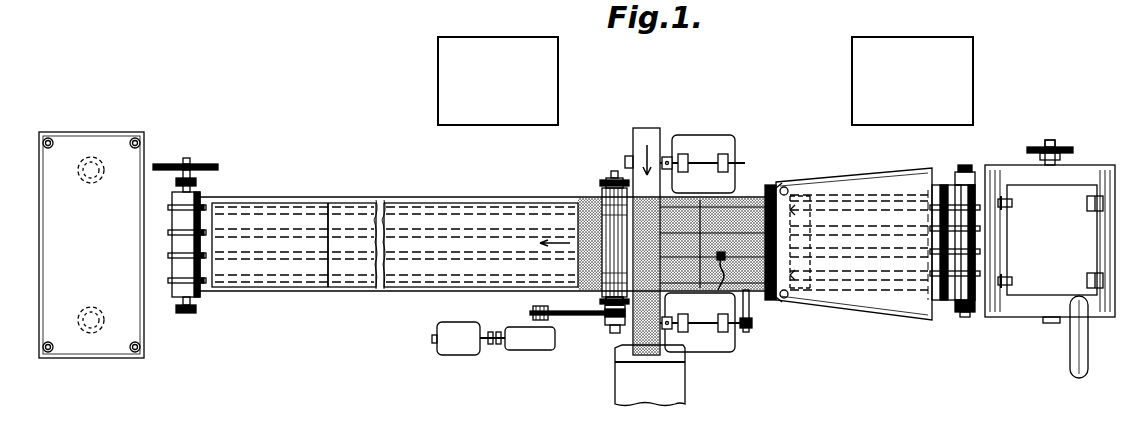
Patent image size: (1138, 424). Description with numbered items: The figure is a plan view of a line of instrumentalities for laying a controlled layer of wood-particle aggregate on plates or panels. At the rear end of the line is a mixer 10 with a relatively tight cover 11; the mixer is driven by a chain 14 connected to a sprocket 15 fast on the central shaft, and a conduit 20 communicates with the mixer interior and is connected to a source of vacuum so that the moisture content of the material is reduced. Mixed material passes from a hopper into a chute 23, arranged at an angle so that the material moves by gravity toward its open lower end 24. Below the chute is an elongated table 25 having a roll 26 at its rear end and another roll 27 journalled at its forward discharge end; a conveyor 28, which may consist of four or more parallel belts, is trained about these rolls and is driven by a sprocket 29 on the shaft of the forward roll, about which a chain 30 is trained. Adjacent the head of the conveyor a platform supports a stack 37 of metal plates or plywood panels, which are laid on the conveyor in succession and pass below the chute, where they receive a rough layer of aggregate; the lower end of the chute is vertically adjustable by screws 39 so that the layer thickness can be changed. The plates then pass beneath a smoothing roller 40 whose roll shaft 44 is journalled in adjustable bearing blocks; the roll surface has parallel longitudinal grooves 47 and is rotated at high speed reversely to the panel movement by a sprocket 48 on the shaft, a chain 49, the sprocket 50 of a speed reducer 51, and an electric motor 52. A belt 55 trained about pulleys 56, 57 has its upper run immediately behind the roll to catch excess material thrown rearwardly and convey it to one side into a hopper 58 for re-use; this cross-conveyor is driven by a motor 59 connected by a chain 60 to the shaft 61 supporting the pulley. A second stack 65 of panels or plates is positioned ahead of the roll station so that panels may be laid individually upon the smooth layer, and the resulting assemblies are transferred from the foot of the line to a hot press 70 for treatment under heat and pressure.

The mixer 10 is at (1013, 163).
The cover 11 is at (1035, 283).
The chain 14 is at (1043, 148).
The sprocket 15 is at (1068, 149).
The conduit 20 is at (1070, 342).
The chute 23 is at (904, 177).
The open lower end 24 is at (808, 192).
The table 25 is at (560, 197).
The roll 26 is at (975, 305).
The roll 27 is at (199, 296).
The conveyor 28 is at (170, 233).
The sprocket 29 is at (200, 165).
The chain 30 is at (215, 172).
The stack 37 is at (844, 83).
The screws 39 is at (785, 188).
The smoothing roller 40 is at (601, 190).
The roll shaft 44 is at (614, 172).
The grooves 47 is at (606, 292).
The sprocket 48 is at (606, 322).
The chain 49 is at (575, 318).
The sprocket 50 is at (533, 312).
The speed reducer 51 is at (520, 343).
The electric motor 52 is at (455, 345).
The belt 55 is at (676, 136).
The pulley 56 is at (633, 130).
The pulley 57 is at (625, 347).
The hopper 58 is at (668, 380).
The motor 59 is at (722, 282).
The chain 60 is at (748, 302).
The shaft 61 is at (705, 325).
The second stack 65 is at (430, 78).
The hot press 70 is at (100, 140).